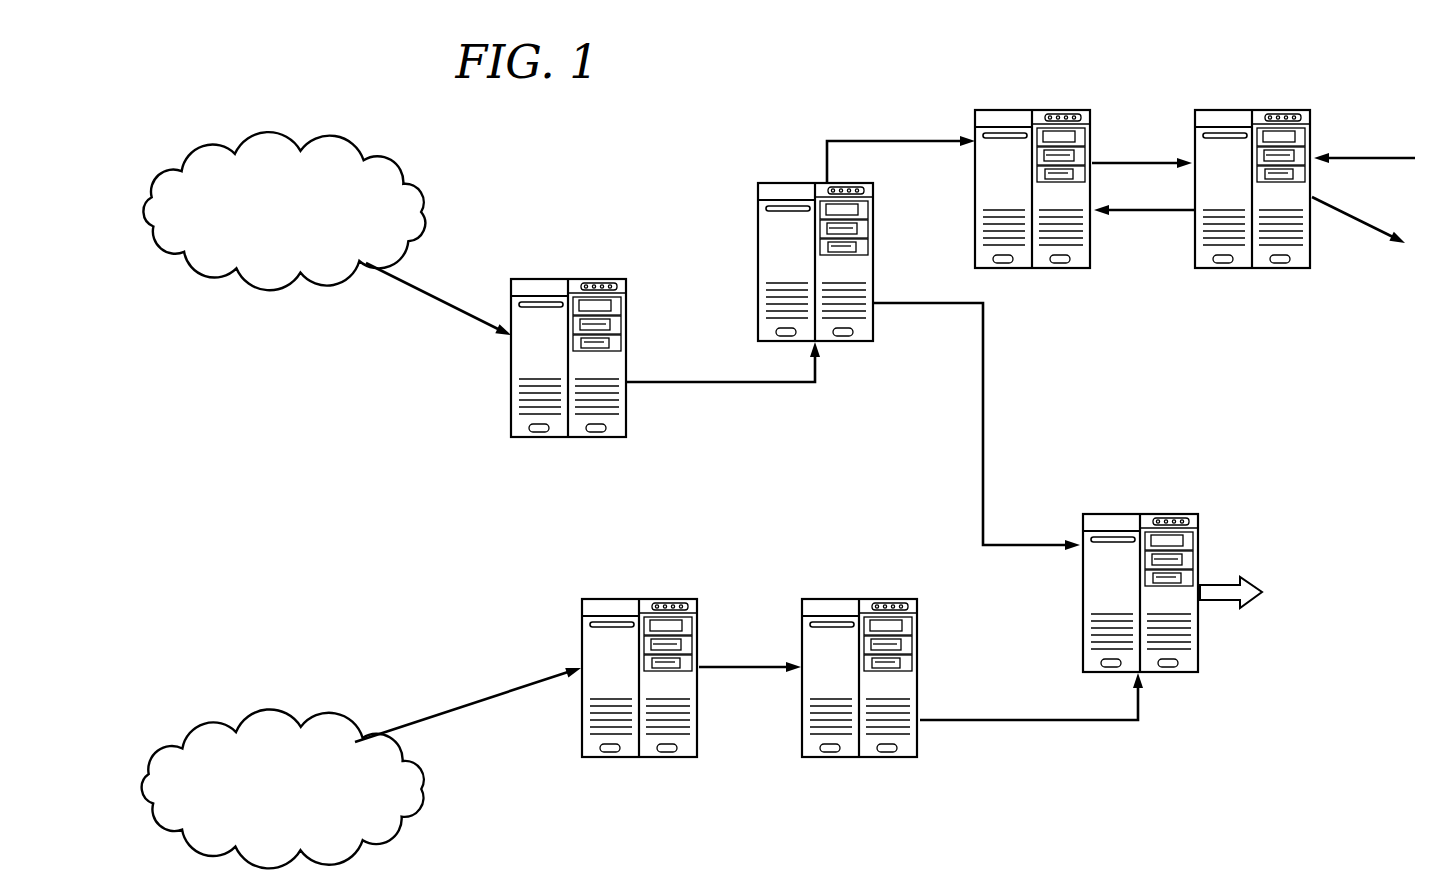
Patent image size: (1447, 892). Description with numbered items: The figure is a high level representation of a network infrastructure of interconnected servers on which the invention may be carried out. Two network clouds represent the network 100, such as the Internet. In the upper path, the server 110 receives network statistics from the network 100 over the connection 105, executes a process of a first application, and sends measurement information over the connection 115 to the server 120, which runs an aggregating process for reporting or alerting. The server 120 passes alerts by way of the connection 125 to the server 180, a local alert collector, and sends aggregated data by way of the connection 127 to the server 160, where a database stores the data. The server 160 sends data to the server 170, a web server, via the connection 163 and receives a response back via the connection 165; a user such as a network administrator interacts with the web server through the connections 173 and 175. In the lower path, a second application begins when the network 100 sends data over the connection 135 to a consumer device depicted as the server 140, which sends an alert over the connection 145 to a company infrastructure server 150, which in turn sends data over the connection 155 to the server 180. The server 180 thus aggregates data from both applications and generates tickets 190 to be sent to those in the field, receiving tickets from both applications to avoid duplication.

The network 100 is at (276, 281).
The connection 105 is at (422, 298).
The server 110 is at (568, 279).
The connection 115 is at (720, 385).
The server 120 is at (783, 183).
The connection 125 is at (983, 404).
The connection 127 is at (890, 141).
The connection 135 is at (445, 700).
The server 140 is at (641, 599).
The connection 145 is at (736, 667).
The server 150 is at (861, 599).
The connection 155 is at (1010, 720).
The server 160 is at (1033, 110).
The connection 163 is at (1138, 163).
The connection 165 is at (1143, 212).
The server 170 is at (1253, 110).
The connection 173 is at (1376, 158).
The connection 175 is at (1352, 222).
The server 180 is at (1141, 514).
The tickets 190 is at (1262, 582).